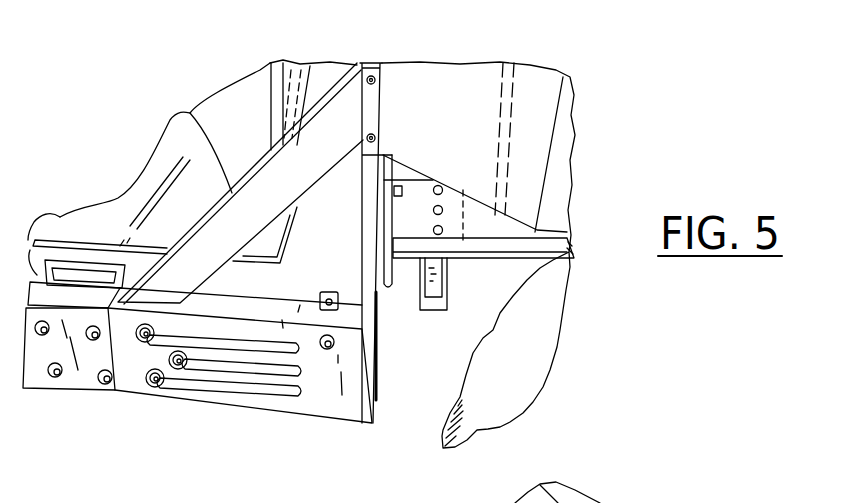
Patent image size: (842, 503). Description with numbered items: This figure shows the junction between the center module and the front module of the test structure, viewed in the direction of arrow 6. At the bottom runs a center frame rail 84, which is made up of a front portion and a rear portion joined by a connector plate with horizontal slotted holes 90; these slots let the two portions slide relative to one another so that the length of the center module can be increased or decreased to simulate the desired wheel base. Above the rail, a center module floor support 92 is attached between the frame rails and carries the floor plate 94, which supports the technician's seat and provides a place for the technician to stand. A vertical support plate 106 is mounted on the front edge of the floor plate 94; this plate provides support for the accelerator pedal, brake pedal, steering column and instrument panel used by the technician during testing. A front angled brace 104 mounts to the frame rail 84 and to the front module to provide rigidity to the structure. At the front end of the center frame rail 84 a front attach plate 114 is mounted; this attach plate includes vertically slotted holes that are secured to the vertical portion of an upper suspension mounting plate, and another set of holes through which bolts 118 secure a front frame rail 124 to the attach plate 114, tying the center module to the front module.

The frame 6 is at (540, 163).
The center frame rail 84 is at (105, 393).
The horizontal slotted holes 90 is at (240, 393).
The center module floor support 92 is at (35, 242).
The floor plate 94 is at (80, 242).
The front angled brace 104 is at (190, 117).
The vertical support plate 106 is at (283, 70).
The front attach plate 114 is at (362, 262).
The bolt 118 is at (399, 262).
The front frame rail 124 is at (497, 262).